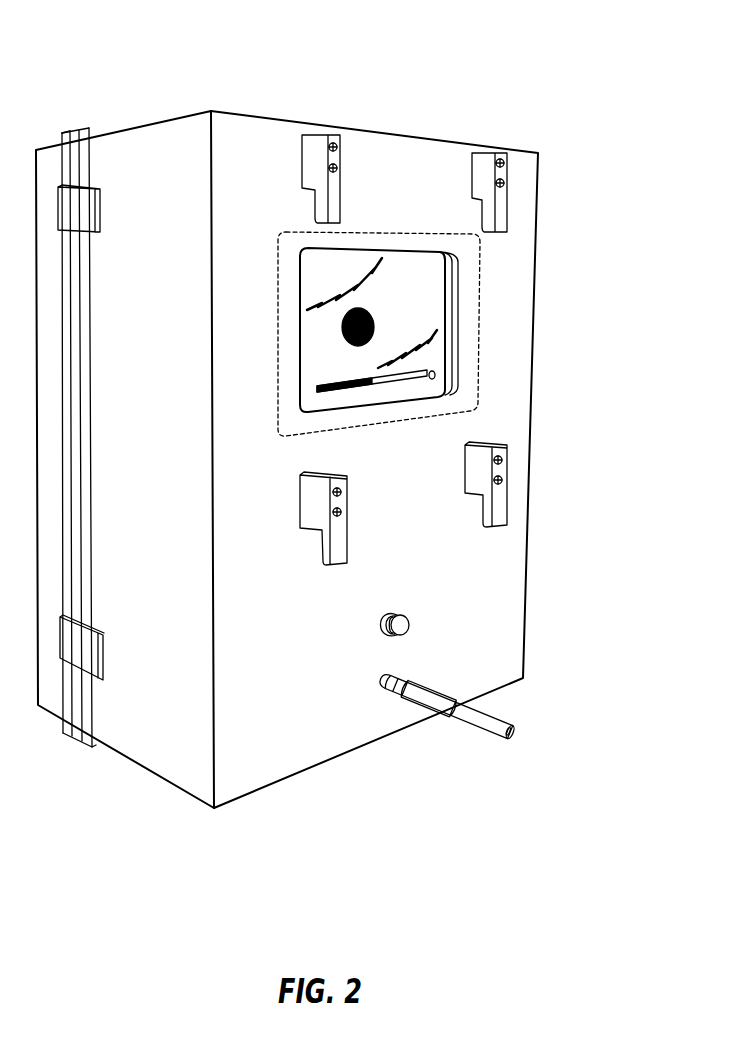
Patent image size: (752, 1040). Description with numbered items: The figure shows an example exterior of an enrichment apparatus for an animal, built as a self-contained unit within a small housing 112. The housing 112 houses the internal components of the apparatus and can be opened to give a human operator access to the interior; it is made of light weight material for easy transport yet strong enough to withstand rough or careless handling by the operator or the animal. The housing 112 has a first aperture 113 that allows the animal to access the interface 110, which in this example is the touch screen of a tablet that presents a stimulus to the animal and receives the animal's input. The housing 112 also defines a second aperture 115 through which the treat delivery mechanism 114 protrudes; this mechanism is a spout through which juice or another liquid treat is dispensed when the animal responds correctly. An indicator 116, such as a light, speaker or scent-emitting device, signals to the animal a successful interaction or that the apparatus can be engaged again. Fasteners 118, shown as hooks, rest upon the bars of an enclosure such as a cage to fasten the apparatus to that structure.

The housing 112 is at (157, 122).
The fasteners 118 is at (320, 133).
The first aperture 113 is at (442, 280).
The interface 110 is at (415, 316).
The indicator 116 is at (408, 623).
The treat delivery mechanism 114 is at (475, 727).
The second aperture 115 is at (388, 693).